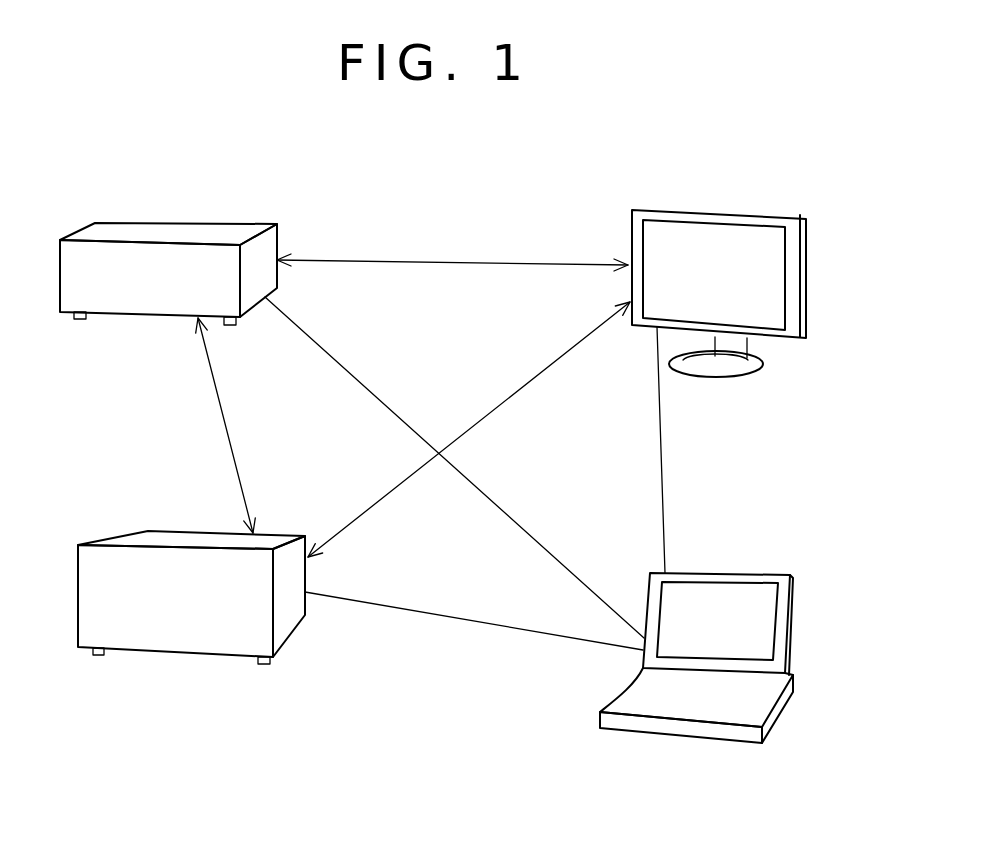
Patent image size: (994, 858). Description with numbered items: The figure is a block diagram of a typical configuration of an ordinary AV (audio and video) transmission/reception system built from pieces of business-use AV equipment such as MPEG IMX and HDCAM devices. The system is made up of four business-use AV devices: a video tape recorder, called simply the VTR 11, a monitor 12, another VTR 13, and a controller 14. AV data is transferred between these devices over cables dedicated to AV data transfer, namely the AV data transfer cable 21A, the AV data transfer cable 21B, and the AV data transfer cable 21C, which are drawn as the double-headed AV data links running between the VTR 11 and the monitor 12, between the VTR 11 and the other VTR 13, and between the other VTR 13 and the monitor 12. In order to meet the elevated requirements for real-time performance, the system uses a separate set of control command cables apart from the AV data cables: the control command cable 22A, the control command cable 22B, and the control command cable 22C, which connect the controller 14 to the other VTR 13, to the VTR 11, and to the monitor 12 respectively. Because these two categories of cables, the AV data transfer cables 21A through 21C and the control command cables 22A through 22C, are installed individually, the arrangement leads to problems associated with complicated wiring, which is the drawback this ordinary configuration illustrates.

The video tape recorder (VTR) 11 is at (195, 222).
The monitor 12 is at (714, 210).
The another VTR 13 is at (194, 531).
The controller 14 is at (690, 740).
The AV data transfer cable 21A is at (447, 260).
The AV data transfer cable 21B is at (222, 410).
The AV data transfer cable 21C is at (487, 418).
The control command cable 22A is at (448, 617).
The control command cable 22B is at (475, 488).
The control command cable 22C is at (665, 508).